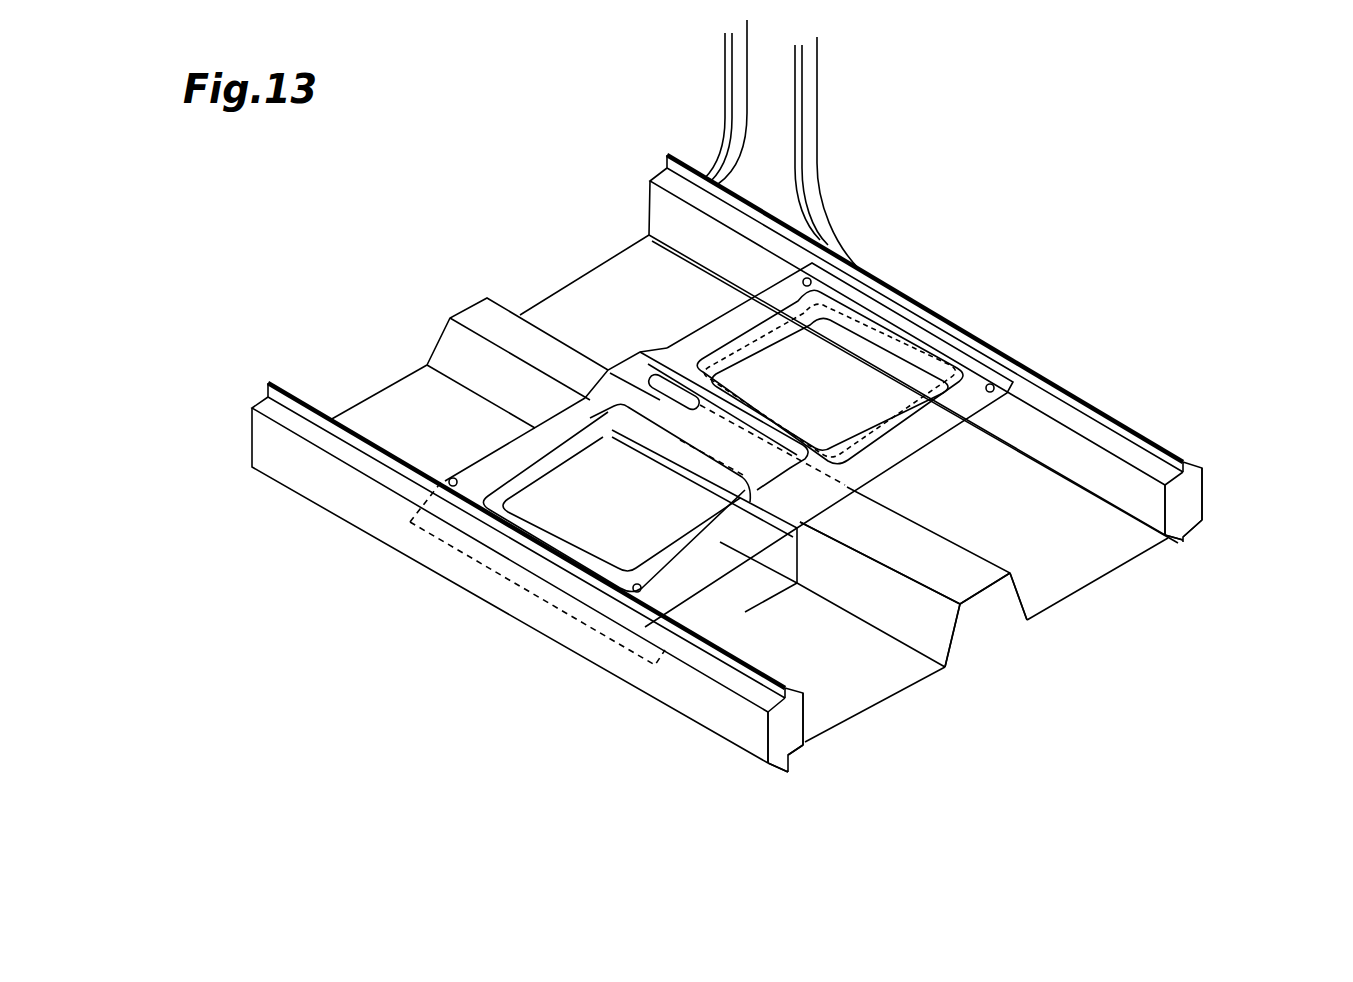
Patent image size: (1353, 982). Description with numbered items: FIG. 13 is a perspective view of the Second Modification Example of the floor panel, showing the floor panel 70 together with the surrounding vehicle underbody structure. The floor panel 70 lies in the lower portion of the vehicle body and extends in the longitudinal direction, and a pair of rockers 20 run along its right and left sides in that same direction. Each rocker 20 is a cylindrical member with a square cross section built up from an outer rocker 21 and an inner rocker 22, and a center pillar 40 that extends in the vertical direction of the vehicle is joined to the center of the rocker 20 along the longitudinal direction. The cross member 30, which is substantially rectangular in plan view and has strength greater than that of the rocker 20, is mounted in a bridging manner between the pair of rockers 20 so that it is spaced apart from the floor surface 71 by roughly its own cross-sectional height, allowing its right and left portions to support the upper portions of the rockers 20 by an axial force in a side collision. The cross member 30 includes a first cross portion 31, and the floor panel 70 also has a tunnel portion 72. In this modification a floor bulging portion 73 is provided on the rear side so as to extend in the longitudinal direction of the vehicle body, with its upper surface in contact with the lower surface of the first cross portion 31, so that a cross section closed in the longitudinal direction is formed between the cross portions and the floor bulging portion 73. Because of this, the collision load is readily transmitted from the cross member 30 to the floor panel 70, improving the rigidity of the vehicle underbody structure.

The rocker 20 is at (930, 295).
The outer rocker 21 is at (1204, 491).
The inner rocker 22 is at (1156, 504).
The cross member 30 is at (815, 426).
The first cross portion 31 is at (750, 525).
The center pillar 40 is at (766, 139).
The floor panel 70 is at (912, 560).
The floor surface 71 is at (1090, 563).
The tunnel portion 72 is at (957, 583).
The floor bulging portion 73 is at (890, 380).